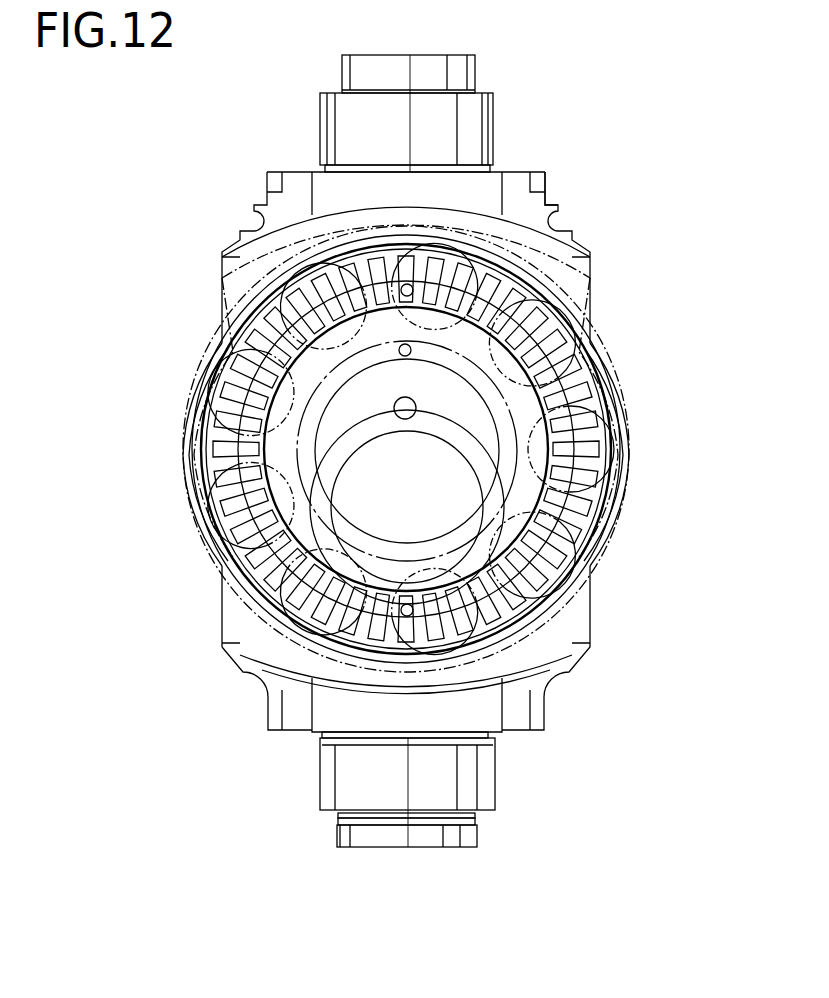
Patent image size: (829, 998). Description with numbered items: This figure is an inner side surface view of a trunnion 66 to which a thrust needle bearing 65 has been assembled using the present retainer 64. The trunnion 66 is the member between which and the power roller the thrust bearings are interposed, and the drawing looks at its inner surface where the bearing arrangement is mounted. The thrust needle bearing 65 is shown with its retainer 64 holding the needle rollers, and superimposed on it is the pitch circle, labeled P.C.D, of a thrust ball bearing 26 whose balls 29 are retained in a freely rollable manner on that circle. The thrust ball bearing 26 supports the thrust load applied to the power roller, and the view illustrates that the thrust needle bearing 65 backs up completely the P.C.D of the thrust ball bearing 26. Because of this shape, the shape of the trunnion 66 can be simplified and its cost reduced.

The thrust ball bearing 26 is at (566, 578).
The balls 29 is at (622, 487).
The retainer 64 is at (505, 290).
The thrust needle bearing 65 is at (622, 341).
The trunnion 66 is at (557, 223).
The pitch circle diameter P.C.D is at (612, 368).